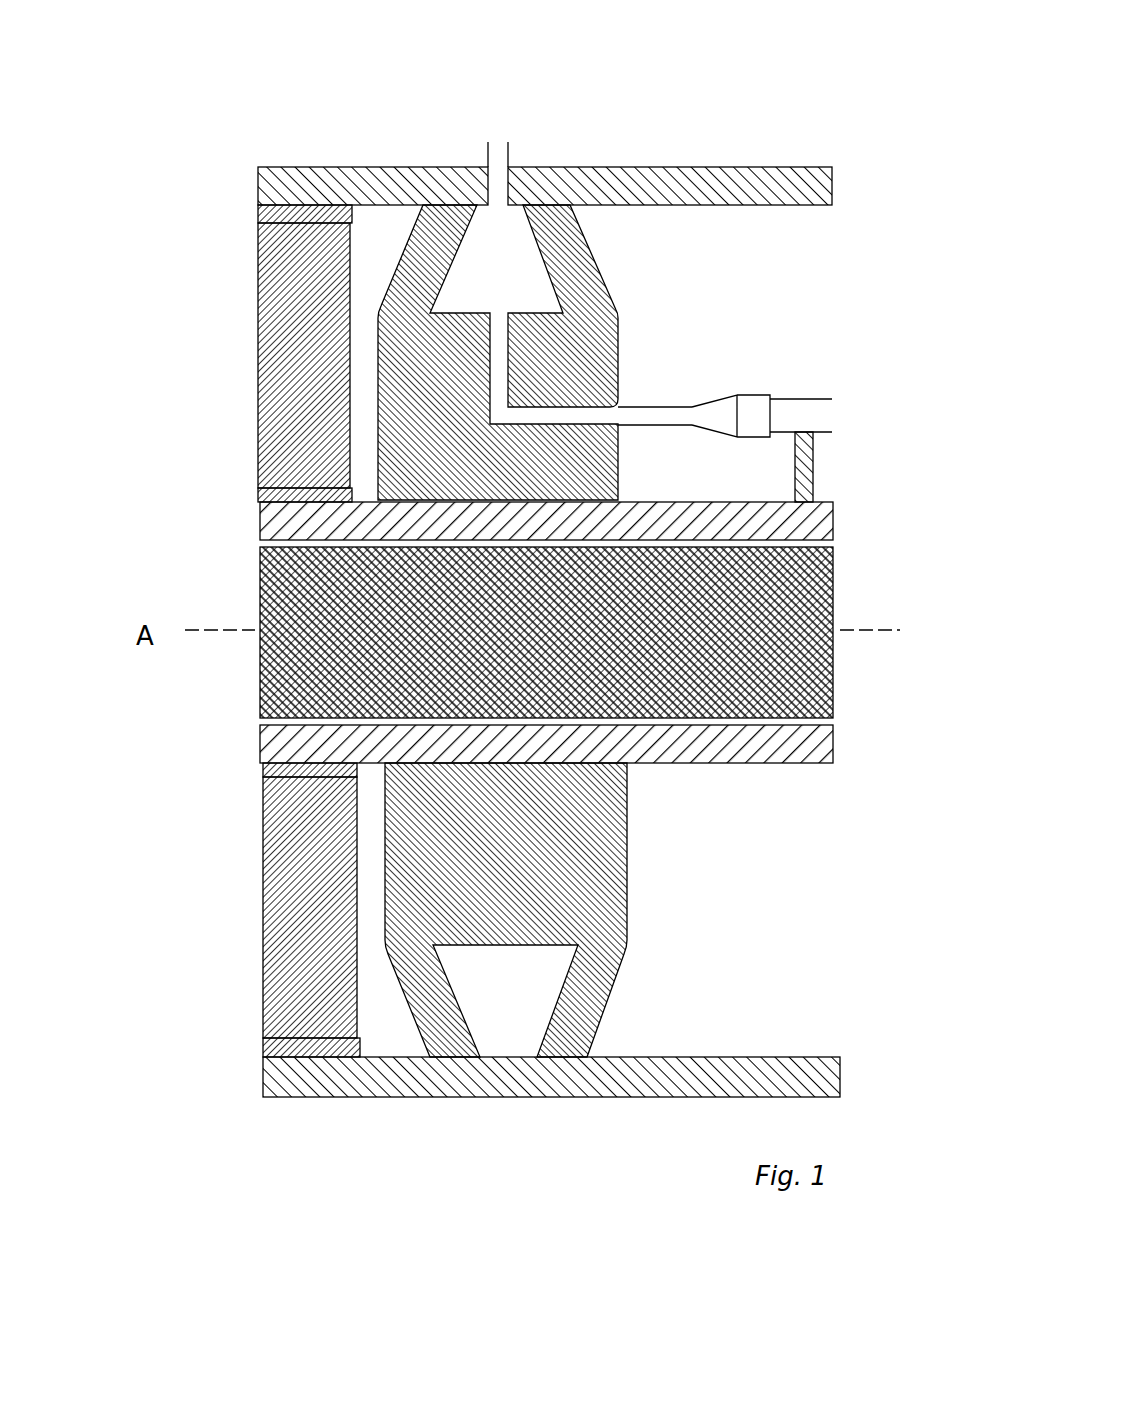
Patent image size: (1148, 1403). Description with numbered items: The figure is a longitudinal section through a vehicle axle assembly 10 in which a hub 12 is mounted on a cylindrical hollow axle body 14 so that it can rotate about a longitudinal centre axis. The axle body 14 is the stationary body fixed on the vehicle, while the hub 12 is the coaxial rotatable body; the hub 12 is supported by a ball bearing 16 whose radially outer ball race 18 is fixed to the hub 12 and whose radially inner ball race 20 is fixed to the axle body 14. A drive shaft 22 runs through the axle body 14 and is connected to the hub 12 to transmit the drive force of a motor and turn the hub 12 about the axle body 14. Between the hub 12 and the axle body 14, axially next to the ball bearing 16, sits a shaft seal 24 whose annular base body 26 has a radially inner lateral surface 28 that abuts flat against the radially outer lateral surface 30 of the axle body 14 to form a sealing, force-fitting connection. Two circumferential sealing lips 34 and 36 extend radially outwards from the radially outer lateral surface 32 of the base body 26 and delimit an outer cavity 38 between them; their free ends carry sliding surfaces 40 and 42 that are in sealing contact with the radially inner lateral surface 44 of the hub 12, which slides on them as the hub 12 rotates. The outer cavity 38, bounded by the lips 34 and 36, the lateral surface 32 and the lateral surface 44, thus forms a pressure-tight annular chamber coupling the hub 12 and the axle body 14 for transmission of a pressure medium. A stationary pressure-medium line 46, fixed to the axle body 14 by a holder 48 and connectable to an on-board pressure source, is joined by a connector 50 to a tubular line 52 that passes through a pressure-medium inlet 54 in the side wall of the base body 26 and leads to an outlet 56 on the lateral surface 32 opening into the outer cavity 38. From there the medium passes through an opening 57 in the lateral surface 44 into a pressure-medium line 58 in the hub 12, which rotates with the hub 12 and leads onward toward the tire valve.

The vehicle axle assembly 10 is at (200, 145).
The hub 12 is at (328, 166).
The axle body 14 is at (838, 520).
The ball bearing 16 is at (240, 357).
The radially outer ball race 18 is at (258, 213).
The radially inner ball race 20 is at (258, 496).
The drive shaft 22 is at (836, 590).
The shaft seal 24 is at (655, 297).
The annular base body 26 is at (572, 350).
The radially inner lateral surface 28 is at (565, 515).
The radially outer lateral surface 30 is at (715, 497).
The radially outer lateral surface 32 is at (458, 200).
The circumferential sealing lip 34 is at (598, 250).
The circumferential sealing lip 36 is at (398, 245).
The outer cavity 38 is at (512, 281).
The sliding surface 40 is at (520, 290).
The sliding surface 42 is at (458, 305).
The radially inner lateral surface 44 is at (796, 210).
The pressure-medium line 46 is at (818, 400).
The holder 48 is at (815, 450).
The connector 50 is at (752, 395).
The tubular line 52 is at (592, 410).
The pressure-medium inlet 54 is at (635, 440).
The outlet 56 is at (538, 205).
The opening 57 is at (512, 205).
The pressure-medium line 58 is at (495, 167).